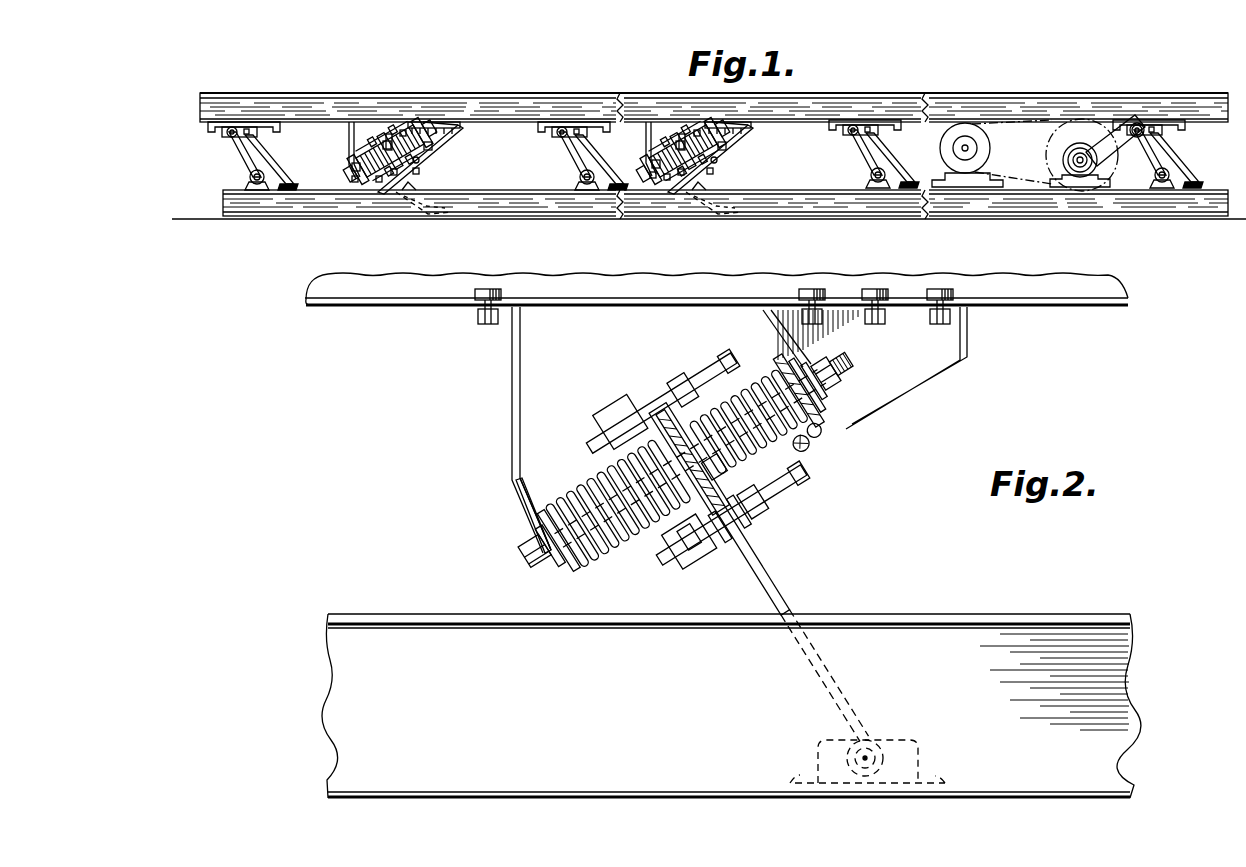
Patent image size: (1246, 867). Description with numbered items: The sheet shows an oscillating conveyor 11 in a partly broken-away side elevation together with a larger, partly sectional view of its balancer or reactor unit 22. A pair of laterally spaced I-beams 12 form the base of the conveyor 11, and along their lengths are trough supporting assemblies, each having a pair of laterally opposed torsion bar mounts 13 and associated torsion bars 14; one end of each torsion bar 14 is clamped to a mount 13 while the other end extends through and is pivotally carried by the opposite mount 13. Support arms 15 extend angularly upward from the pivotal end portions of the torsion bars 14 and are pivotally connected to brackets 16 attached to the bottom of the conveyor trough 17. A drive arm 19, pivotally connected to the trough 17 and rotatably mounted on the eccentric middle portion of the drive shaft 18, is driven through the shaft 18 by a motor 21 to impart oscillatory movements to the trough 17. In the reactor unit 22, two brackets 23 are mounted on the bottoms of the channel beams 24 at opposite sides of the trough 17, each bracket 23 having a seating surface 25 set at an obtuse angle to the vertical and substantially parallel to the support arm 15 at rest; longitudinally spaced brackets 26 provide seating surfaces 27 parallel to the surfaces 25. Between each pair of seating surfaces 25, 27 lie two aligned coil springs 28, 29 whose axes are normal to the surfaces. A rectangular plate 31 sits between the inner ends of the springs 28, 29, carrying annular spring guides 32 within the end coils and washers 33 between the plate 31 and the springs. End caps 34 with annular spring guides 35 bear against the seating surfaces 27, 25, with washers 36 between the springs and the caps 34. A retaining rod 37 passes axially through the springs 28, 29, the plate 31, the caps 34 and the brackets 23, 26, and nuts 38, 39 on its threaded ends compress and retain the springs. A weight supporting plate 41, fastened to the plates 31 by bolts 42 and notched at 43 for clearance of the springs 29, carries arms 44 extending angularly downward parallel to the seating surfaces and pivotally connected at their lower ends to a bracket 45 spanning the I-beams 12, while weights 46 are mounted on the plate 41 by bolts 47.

In FIG. 1, the oscillating conveyor 11 is at (920, 90).
In FIG. 2, the oscillating conveyor 11 is at (1133, 292).
In FIG. 1, the I-beams 12 is at (800, 196).
In FIG. 2, the I-beams 12 is at (1030, 640).
In FIG. 1, the torsion bar mounts 13 is at (244, 185).
In FIG. 1, the torsion bars 14 is at (252, 175).
In FIG. 1, the support arms 15 is at (234, 150).
In FIG. 1, the brackets 16 is at (238, 124).
In FIG. 1, the conveyor trough 17 is at (699, 104).
In FIG. 1, the drive shaft 18 is at (1066, 158).
In FIG. 1, the drive arm 19 is at (1117, 135).
In FIG. 1, the motor 21 is at (991, 152).
In FIG. 1, the reactor unit 22 is at (436, 150).
In FIG. 2, the reactor unit 22 is at (776, 572).
In FIG. 1, the brackets 23 is at (442, 140).
In FIG. 2, the brackets 23 is at (883, 404).
In FIG. 1, the channel beams 24 is at (494, 101).
In FIG. 2, the channel beams 24 is at (1060, 297).
In FIG. 1, the seating surface 25 is at (415, 122).
In FIG. 2, the seating surface 25 is at (776, 337).
In FIG. 1, the brackets 26 is at (349, 136).
In FIG. 2, the brackets 26 is at (512, 388).
In FIG. 2, the seating surface 27 is at (522, 480).
In FIG. 1, the coil spring 28 is at (385, 178).
In FIG. 2, the coil spring 28 is at (626, 548).
In FIG. 1, the coil spring 29 is at (419, 161).
In FIG. 2, the coil spring 29 is at (802, 447).
In FIG. 1, the rectangular plate 31 is at (385, 140).
In FIG. 2, the rectangular plate 31 is at (738, 556).
In FIG. 2, the annular spring guides 32 is at (722, 484).
In FIG. 2, the washers 33 is at (691, 542).
In FIG. 1, the end caps 34 is at (403, 130).
In FIG. 2, the end caps 34 is at (576, 562).
In FIG. 2, the annular spring guides 35 is at (548, 515).
In FIG. 2, the washers 36 is at (560, 556).
In FIG. 1, the retaining rod 37 is at (354, 180).
In FIG. 2, the retaining rod 37 is at (858, 368).
In FIG. 1, the nut 38 is at (356, 167).
In FIG. 2, the nut 38 is at (530, 540).
In FIG. 1, the nut 39 is at (432, 146).
In FIG. 2, the nut 39 is at (822, 356).
In FIG. 1, the weight supporting plate 41 is at (386, 141).
In FIG. 2, the weight supporting plate 41 is at (749, 545).
In FIG. 2, the bolts 42 is at (667, 366).
In FIG. 2, the notches 43 is at (768, 495).
In FIG. 1, the arms 44 is at (410, 192).
In FIG. 2, the arms 44 is at (783, 600).
In FIG. 1, the bracket 45 is at (445, 214).
In FIG. 2, the bracket 45 is at (921, 748).
In FIG. 1, the weights 46 is at (420, 171).
In FIG. 2, the weights 46 is at (718, 362).
In FIG. 2, the bolts 47 is at (592, 432).